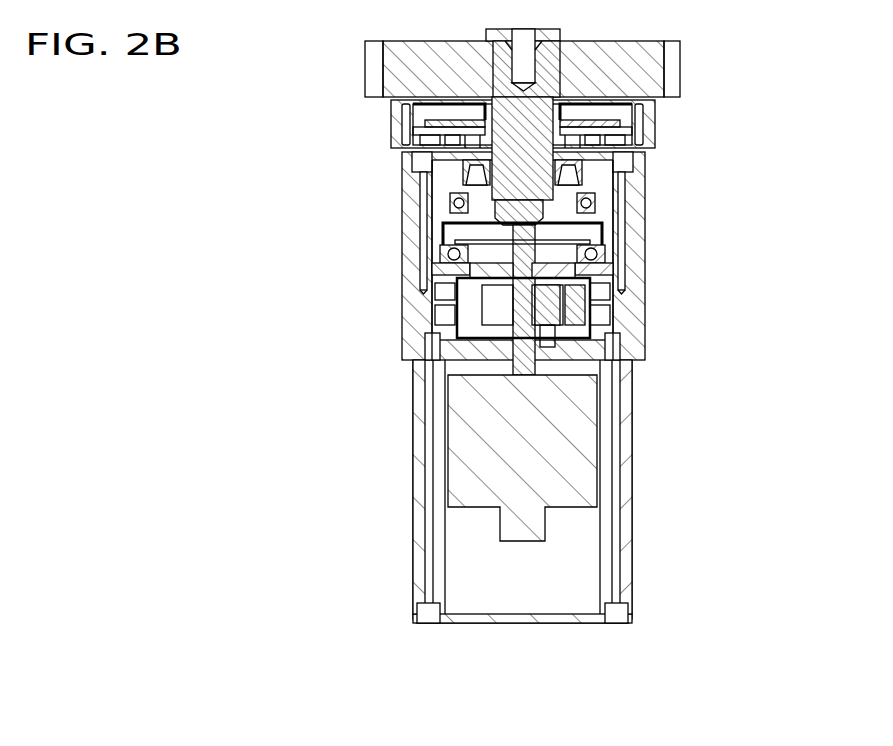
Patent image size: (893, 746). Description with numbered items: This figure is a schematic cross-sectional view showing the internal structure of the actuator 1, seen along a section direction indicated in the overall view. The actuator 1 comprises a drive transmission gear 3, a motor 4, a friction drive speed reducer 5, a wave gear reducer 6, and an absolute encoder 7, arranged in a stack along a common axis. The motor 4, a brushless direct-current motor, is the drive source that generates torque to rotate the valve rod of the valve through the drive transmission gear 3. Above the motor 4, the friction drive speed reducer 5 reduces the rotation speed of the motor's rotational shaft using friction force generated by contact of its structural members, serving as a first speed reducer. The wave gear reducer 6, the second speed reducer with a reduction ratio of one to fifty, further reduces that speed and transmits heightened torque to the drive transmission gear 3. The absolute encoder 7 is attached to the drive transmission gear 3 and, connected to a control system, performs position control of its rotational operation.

The actuator 1 is at (510, 326).
The drive transmission gear 3 is at (647, 64).
The motor 4 is at (679, 360).
The friction drive speed reducer 5 is at (679, 265).
The wave gear reducer 6 is at (679, 212).
The absolute encoder 7 is at (651, 128).